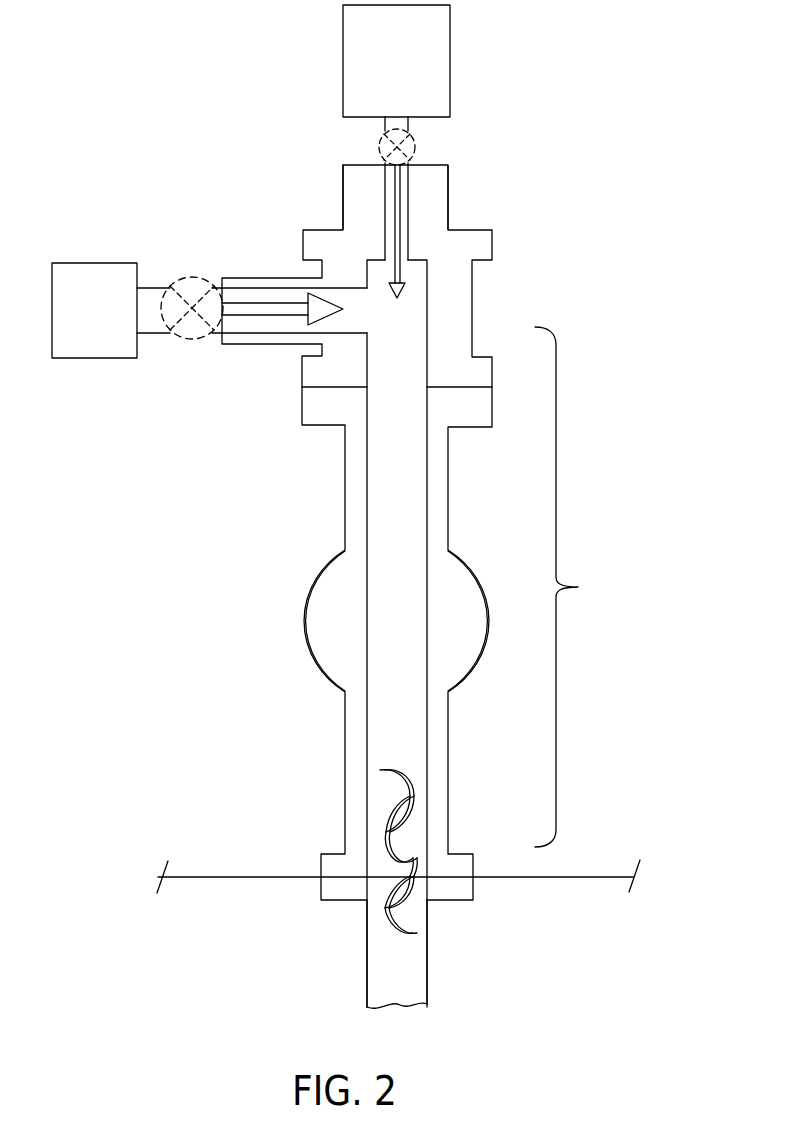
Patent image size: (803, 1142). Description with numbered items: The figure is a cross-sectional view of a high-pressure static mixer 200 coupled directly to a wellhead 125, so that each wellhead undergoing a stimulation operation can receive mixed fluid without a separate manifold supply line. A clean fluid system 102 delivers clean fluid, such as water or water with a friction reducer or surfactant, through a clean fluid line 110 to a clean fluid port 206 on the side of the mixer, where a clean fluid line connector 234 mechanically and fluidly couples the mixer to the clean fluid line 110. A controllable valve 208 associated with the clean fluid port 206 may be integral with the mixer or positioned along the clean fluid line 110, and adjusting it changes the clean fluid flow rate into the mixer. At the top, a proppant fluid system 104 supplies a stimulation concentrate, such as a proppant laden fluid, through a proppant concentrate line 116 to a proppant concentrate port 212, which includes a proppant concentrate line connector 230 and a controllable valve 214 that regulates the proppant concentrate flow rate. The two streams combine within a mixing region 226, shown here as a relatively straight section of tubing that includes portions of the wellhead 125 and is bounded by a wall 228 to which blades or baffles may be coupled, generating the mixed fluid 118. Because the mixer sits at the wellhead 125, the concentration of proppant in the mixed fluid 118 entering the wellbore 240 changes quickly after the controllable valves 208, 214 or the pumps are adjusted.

The clean fluid system 102 is at (93, 263).
The proppant fluid system 104 is at (452, 68).
The clean fluid line 110 is at (158, 293).
The proppant concentrate line 116 is at (388, 125).
The mixed fluid 118 is at (354, 822).
The wellhead 125 is at (271, 631).
The high-pressure static mixer 200 is at (540, 244).
The clean fluid port 206 is at (250, 287).
The controllable valve 208 is at (180, 332).
The proppant concentrate port 212 is at (383, 226).
The controllable valve 214 is at (413, 150).
The mixing region 226 is at (577, 587).
The wall 228 is at (373, 391).
The proppant concentrate line connector 230 is at (407, 180).
The clean fluid line connector 234 is at (219, 323).
The wellbore 240 is at (359, 968).